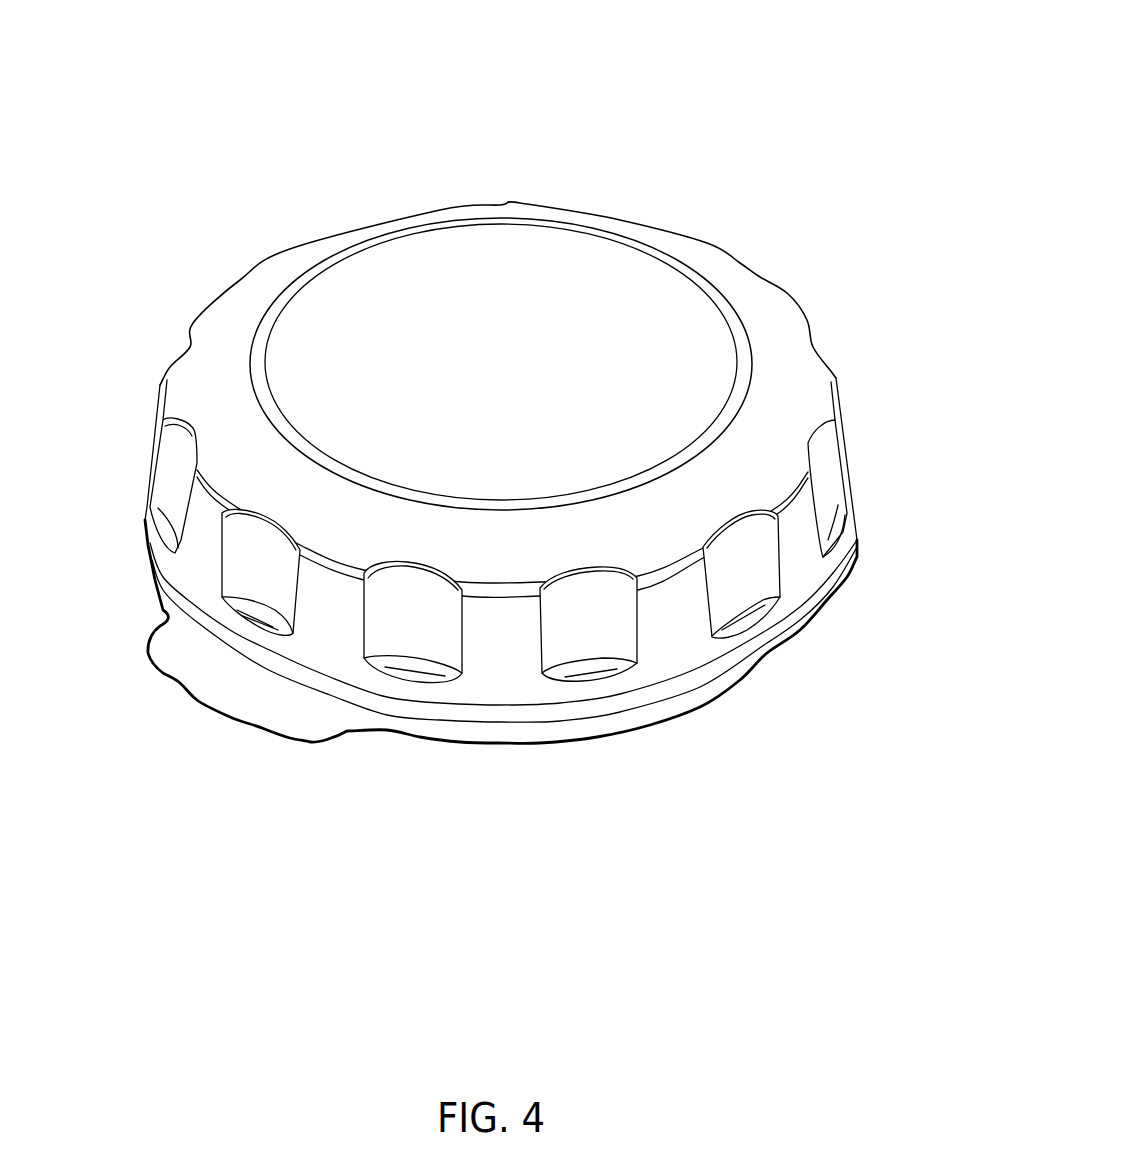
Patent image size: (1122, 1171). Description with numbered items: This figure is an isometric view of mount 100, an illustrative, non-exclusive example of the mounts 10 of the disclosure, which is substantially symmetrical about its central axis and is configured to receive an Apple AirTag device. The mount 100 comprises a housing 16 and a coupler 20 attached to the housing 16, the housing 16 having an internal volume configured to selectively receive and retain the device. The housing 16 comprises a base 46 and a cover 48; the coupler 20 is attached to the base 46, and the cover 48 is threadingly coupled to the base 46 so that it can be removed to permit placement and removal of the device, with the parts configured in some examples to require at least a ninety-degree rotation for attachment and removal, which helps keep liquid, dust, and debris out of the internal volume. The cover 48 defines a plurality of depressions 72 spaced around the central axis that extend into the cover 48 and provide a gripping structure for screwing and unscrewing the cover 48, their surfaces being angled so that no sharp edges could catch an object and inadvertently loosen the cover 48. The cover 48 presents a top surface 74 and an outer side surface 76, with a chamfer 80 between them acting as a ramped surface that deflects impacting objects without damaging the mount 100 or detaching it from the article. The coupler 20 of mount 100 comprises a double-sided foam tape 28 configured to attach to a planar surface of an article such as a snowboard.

The mount 10 is at (862, 52).
The mount 100 is at (745, 102).
The housing 16 is at (868, 470).
The coupler 20 is at (398, 745).
The double-sided foam tape 28 is at (440, 745).
The base 46 is at (143, 522).
The cover 48 is at (739, 262).
The depressions 72 is at (826, 502).
The top surface 74 is at (515, 351).
The outer side surface 76 is at (499, 665).
The chamfer 80 is at (783, 410).